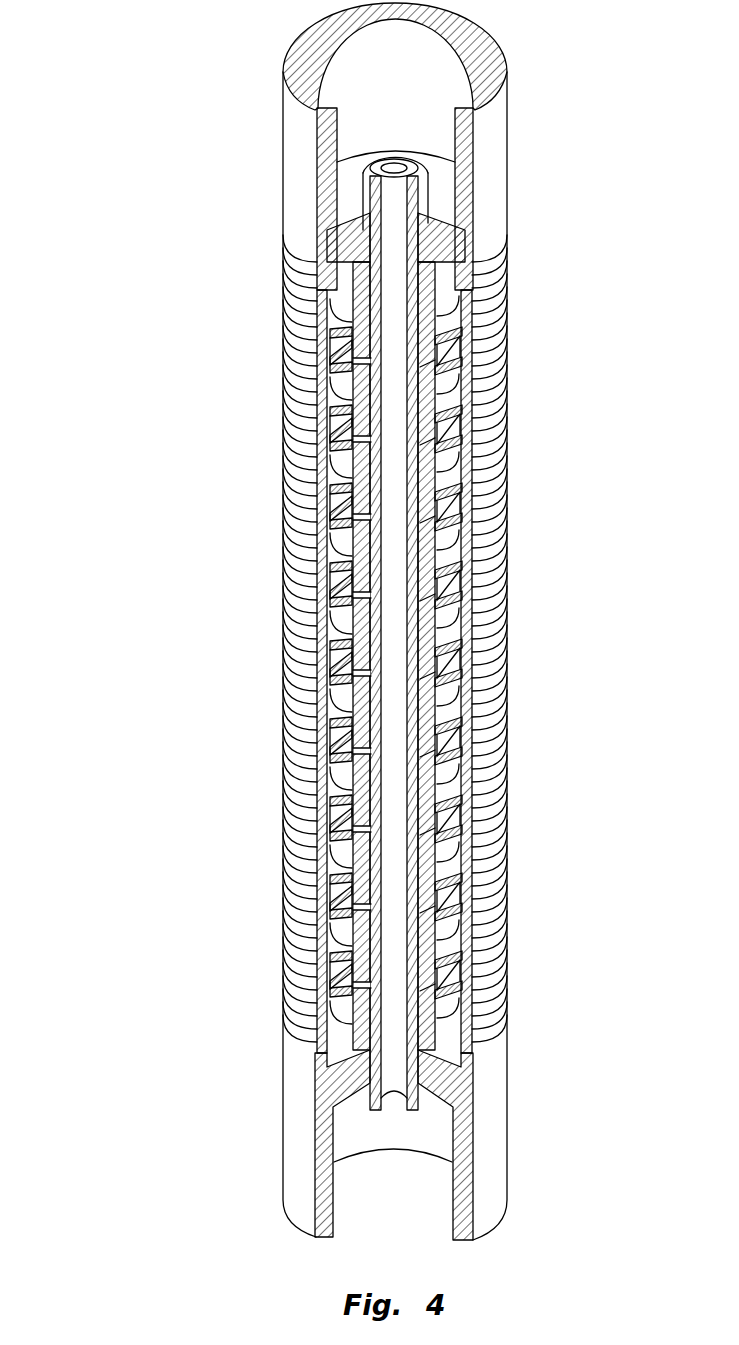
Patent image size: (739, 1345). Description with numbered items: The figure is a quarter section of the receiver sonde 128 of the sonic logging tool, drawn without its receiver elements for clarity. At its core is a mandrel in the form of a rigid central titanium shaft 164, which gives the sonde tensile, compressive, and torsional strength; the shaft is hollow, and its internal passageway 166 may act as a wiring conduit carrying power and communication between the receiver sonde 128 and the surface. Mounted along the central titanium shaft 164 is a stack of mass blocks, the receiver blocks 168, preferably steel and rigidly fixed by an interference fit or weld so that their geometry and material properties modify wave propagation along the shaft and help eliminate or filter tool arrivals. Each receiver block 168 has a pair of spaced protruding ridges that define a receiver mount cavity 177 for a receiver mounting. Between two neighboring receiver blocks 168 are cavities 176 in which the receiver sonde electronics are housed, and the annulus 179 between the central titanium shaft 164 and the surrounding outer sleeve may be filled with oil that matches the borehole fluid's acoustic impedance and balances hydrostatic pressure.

The receiver sonde 128 is at (148, 241).
The central titanium shaft 164 is at (370, 188).
The internal passageway 166 is at (388, 163).
The receiver blocks 168 is at (470, 268).
The cavities 176 is at (442, 404).
The receiver mount cavity 177 is at (455, 352).
The annulus 179 is at (453, 318).